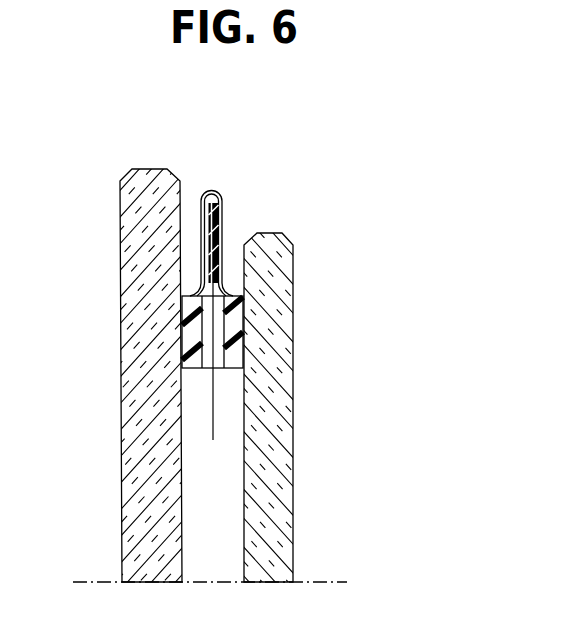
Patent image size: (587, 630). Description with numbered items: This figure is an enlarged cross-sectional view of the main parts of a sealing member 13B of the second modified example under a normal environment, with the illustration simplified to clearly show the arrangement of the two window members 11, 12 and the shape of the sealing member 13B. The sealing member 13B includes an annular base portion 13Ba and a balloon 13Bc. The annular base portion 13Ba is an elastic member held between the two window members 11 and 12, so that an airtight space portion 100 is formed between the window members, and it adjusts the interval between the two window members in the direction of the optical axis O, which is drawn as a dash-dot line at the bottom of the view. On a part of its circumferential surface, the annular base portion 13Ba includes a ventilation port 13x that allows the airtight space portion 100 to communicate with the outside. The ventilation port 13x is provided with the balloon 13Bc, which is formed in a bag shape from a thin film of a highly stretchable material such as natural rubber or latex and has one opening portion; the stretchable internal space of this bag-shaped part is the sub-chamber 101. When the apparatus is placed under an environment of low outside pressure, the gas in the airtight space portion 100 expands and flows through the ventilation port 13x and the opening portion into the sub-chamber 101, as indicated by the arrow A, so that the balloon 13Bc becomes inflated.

The window member 11 is at (150, 178).
The window member 12 is at (263, 250).
The sub-chamber 101 is at (207, 242).
The sealing member 13B is at (383, 290).
The balloon 13Bc is at (220, 261).
The annular base portion 13Ba is at (225, 348).
The ventilation port 13x is at (218, 372).
The airtight space portion 100 is at (222, 462).
The arrow A is at (213, 371).
The optical axis O is at (85, 582).